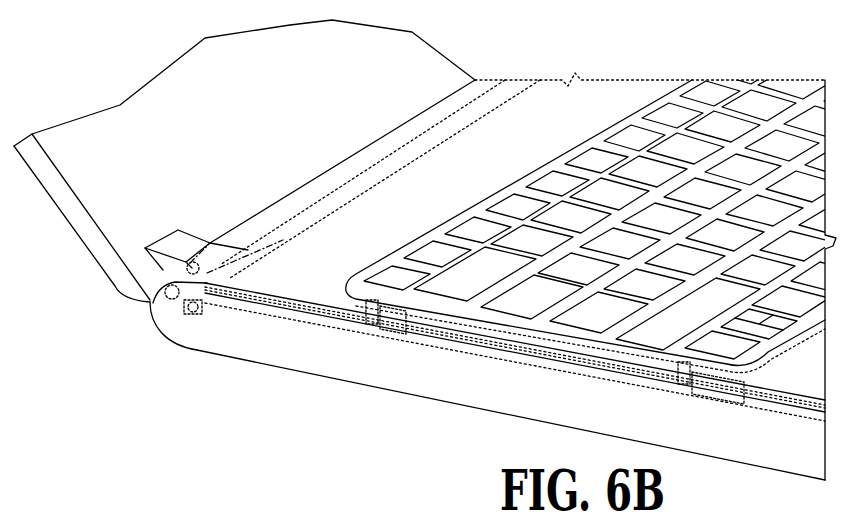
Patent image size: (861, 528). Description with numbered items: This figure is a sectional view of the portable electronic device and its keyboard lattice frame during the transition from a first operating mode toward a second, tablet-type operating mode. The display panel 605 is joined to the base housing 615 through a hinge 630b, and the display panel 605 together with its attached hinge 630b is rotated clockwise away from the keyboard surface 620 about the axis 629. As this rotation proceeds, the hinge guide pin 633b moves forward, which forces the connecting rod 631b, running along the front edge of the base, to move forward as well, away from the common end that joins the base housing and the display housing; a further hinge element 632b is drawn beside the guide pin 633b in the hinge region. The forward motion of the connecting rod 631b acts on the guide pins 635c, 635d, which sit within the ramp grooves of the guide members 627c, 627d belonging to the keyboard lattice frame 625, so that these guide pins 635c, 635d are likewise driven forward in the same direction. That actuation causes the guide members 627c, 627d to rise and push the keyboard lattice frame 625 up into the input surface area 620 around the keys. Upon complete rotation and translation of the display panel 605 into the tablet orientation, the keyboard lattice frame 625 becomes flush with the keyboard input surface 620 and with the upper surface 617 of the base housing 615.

The display panel 605 is at (92, 243).
The base housing 615 is at (290, 372).
The upper surface of the base housing 617 is at (584, 216).
The keyboard input surface 620 is at (508, 204).
The keyboard lattice frame 625 is at (350, 284).
The axis 629 is at (360, 192).
The hinge 630b is at (170, 238).
The connecting rod 631b is at (495, 358).
The hinge pin 632b is at (178, 300).
The hinge guide pin 633b is at (198, 312).
The guide member 627c is at (370, 320).
The guide pin 635c is at (388, 328).
The guide member 627d is at (682, 376).
The guide pin 635d is at (696, 386).